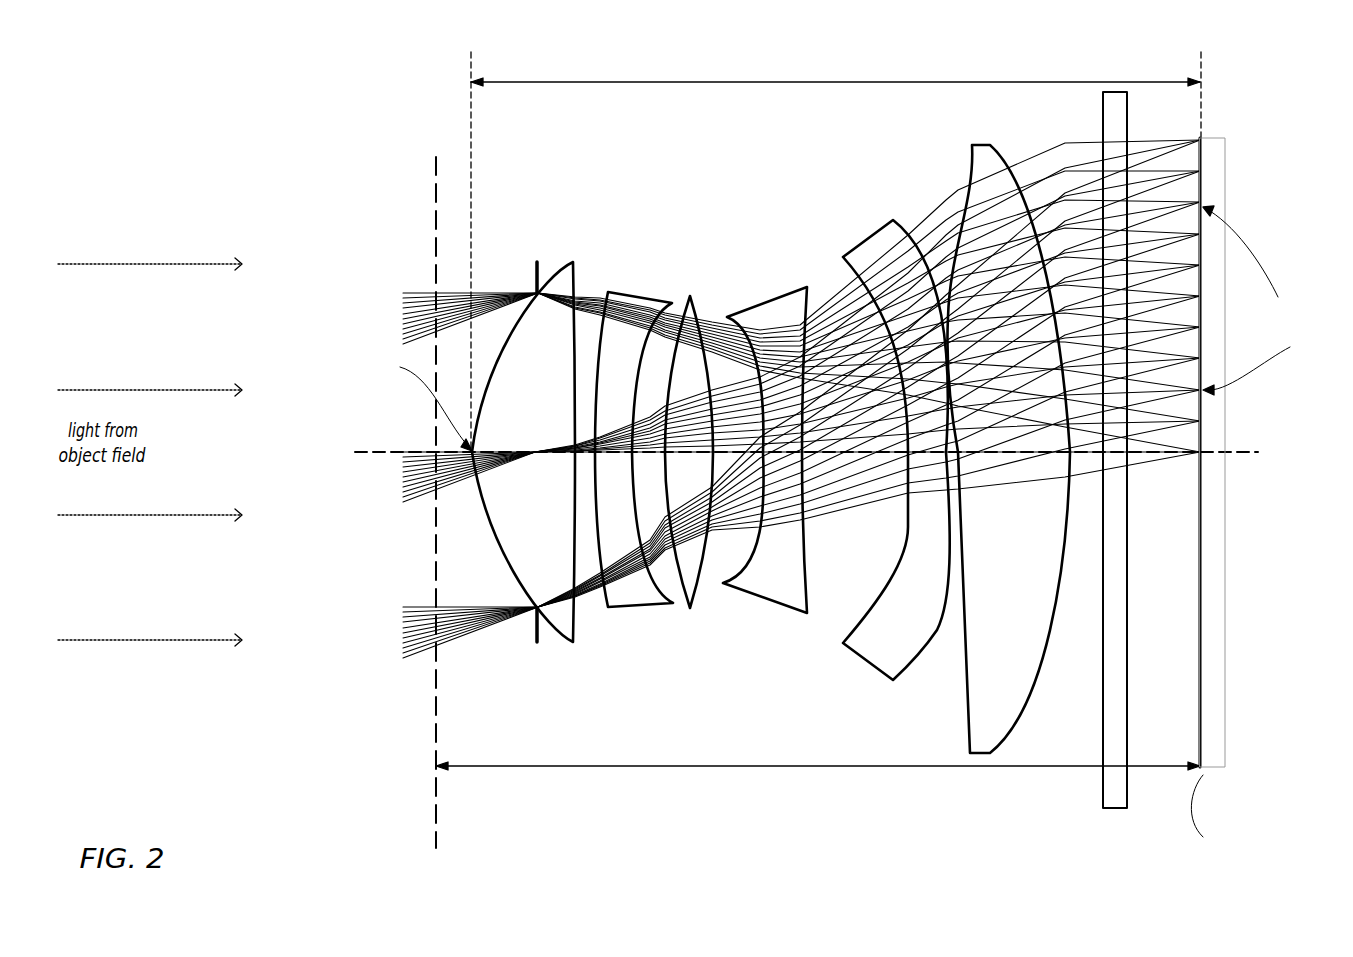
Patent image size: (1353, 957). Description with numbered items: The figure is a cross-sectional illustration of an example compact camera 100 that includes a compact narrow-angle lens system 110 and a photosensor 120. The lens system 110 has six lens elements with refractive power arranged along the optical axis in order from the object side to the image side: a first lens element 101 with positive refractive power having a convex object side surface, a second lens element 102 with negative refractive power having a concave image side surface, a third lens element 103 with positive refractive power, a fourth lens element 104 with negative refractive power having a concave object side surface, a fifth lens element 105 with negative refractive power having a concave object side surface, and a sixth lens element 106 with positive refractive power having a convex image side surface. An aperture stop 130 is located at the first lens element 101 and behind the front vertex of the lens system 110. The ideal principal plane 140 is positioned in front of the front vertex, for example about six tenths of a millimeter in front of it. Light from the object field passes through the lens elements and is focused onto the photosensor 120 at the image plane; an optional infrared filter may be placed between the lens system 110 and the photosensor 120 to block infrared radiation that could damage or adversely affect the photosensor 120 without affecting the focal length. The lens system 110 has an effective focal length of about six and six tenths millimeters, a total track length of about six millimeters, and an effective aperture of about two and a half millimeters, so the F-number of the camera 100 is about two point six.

The camera 100 is at (310, 150).
The lens system 110 is at (769, 486).
The first lens element 101 is at (573, 264).
The second lens element 102 is at (640, 607).
The third lens element 103 is at (690, 295).
The fourth lens element 104 is at (765, 605).
The fifth lens element 105 is at (870, 242).
The sixth lens element 106 is at (977, 422).
The photosensor 120 is at (1222, 165).
The aperture stop 130 is at (532, 700).
The principal plane 140 is at (426, 478).